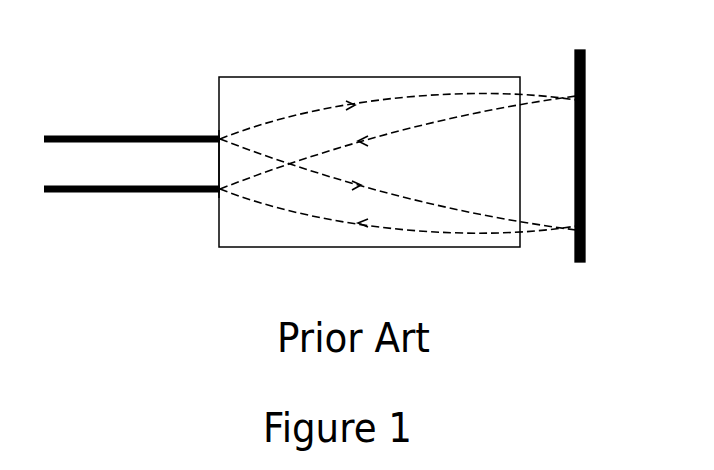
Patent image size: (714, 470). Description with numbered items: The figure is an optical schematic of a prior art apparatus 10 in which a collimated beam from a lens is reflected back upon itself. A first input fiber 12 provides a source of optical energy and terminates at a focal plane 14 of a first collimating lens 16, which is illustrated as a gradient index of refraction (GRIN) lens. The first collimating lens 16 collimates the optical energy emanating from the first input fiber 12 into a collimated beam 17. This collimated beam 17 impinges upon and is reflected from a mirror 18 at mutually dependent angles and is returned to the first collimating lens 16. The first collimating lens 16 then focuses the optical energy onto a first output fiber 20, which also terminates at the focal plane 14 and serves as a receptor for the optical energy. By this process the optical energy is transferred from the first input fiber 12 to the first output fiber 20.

The prior art optical system 10 is at (528, 43).
The first input fiber 12 is at (88, 132).
The focal plane 14 is at (219, 128).
The first collimating lens 16 is at (345, 67).
The collimated beam 17 is at (522, 98).
The mirror 18 is at (593, 87).
The first output fiber 20 is at (100, 178).